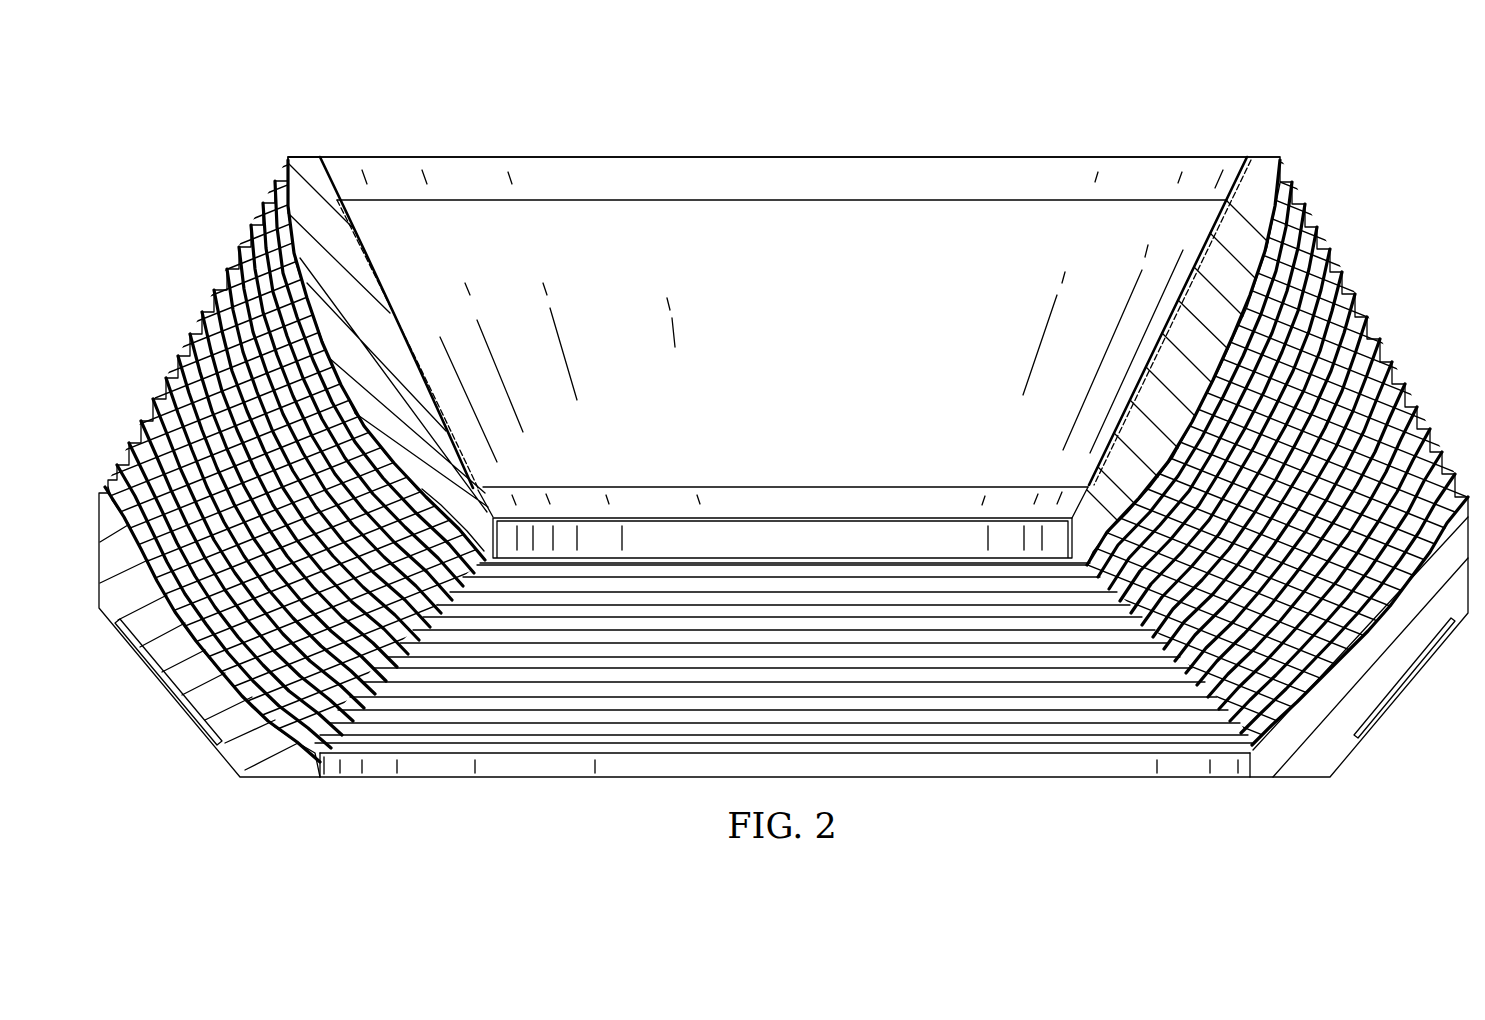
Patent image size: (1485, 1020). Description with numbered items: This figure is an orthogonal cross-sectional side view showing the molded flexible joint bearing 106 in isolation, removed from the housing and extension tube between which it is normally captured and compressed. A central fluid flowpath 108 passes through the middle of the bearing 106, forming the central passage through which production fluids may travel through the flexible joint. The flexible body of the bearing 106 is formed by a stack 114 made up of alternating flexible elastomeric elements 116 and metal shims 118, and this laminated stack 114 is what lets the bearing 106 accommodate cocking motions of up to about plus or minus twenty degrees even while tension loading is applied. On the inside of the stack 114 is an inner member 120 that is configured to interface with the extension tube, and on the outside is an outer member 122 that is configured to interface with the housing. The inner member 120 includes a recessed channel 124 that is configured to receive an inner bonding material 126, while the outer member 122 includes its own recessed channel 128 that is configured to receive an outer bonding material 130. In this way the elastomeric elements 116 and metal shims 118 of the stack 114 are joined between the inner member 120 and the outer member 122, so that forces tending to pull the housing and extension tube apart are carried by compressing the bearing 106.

The bearing 106 is at (1321, 93).
The central fluid flowpath 108 is at (818, 277).
The stack 114 is at (177, 346).
The flexible elastomeric elements 116 is at (1290, 182).
The metal shims 118 is at (1343, 287).
The inner member 120 is at (301, 156).
The outer member 122 is at (277, 770).
The recessed channel 124 is at (412, 340).
The inner bonding material 126 is at (375, 262).
The recessed channel 128 is at (1405, 688).
The outer bonding material 130 is at (1372, 737).